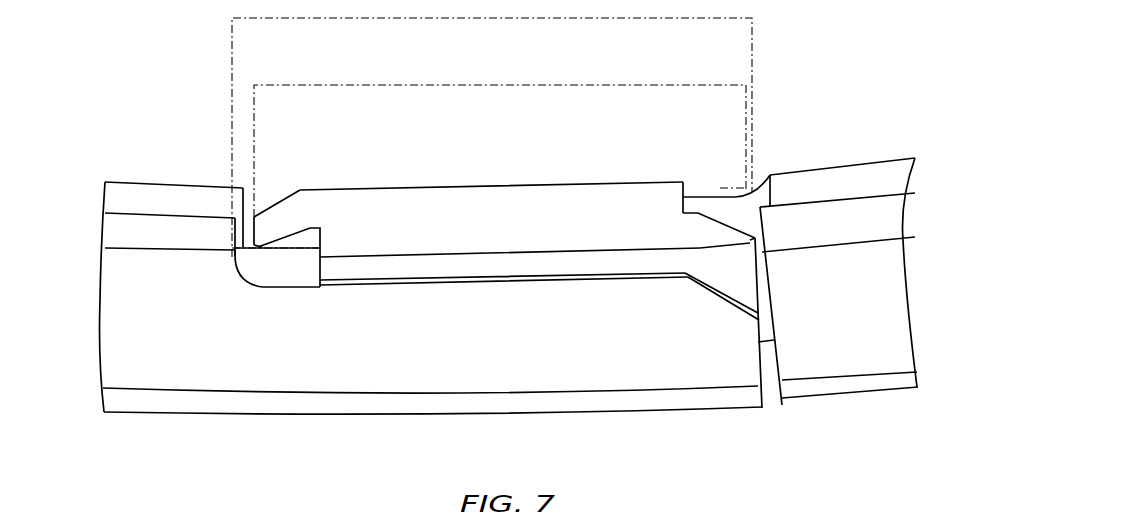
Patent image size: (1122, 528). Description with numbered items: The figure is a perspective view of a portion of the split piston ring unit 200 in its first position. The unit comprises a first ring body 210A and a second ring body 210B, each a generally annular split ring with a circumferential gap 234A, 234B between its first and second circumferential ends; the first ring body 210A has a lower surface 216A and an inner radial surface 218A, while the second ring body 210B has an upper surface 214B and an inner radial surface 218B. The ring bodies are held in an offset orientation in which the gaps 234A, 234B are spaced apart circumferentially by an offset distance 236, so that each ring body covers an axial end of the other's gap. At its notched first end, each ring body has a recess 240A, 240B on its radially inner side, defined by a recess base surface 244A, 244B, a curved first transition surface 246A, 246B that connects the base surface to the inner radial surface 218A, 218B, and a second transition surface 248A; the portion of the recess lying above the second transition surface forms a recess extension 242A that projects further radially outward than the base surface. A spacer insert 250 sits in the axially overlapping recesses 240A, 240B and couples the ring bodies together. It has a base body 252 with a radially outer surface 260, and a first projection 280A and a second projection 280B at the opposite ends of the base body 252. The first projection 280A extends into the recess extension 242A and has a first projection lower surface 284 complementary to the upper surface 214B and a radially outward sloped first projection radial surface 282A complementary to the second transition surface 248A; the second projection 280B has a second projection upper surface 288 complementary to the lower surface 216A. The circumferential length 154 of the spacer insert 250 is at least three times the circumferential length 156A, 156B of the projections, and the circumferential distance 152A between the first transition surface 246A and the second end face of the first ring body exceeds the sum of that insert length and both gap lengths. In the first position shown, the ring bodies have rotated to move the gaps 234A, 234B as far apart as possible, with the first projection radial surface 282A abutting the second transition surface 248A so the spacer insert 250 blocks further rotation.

The circumferential distance 152A is at (232, 40).
The offset distance 236 is at (570, 84).
The circumferential length of the spacer insert 154 is at (733, 137).
The split piston ring unit 200 is at (177, 138).
The second ring body 210B is at (120, 197).
The first ring body 210A is at (117, 310).
The circumferential gap 234B is at (248, 201).
The circumferential length of the first projection 156A is at (242, 246).
The second projection 280B is at (282, 213).
The lower surface 216A is at (290, 246).
The second projection upper surface 288 is at (307, 240).
The recess 240A is at (278, 278).
The first transition surface 246A is at (248, 272).
The base body 252 is at (447, 200).
The spacer insert 250 is at (537, 183).
The first projection lower surface 284 is at (698, 209).
The recess base surface 244B is at (716, 189).
The recess 240B is at (721, 188).
The recess base surface 244A is at (430, 287).
The second transition surface 248A is at (705, 290).
The radially outer surface 260 is at (505, 280).
The first projection 280A is at (738, 246).
The first projection radial surface 282A is at (740, 308).
The recess extension 242A is at (760, 358).
The upper surface 214B is at (760, 243).
The circumferential gap 234A is at (772, 398).
The circumferential length of the second projection 156B is at (730, 188).
The first transition surface 246B is at (761, 199).
The inner radial surface 218B is at (840, 177).
The inner radial surface 218A is at (855, 223).